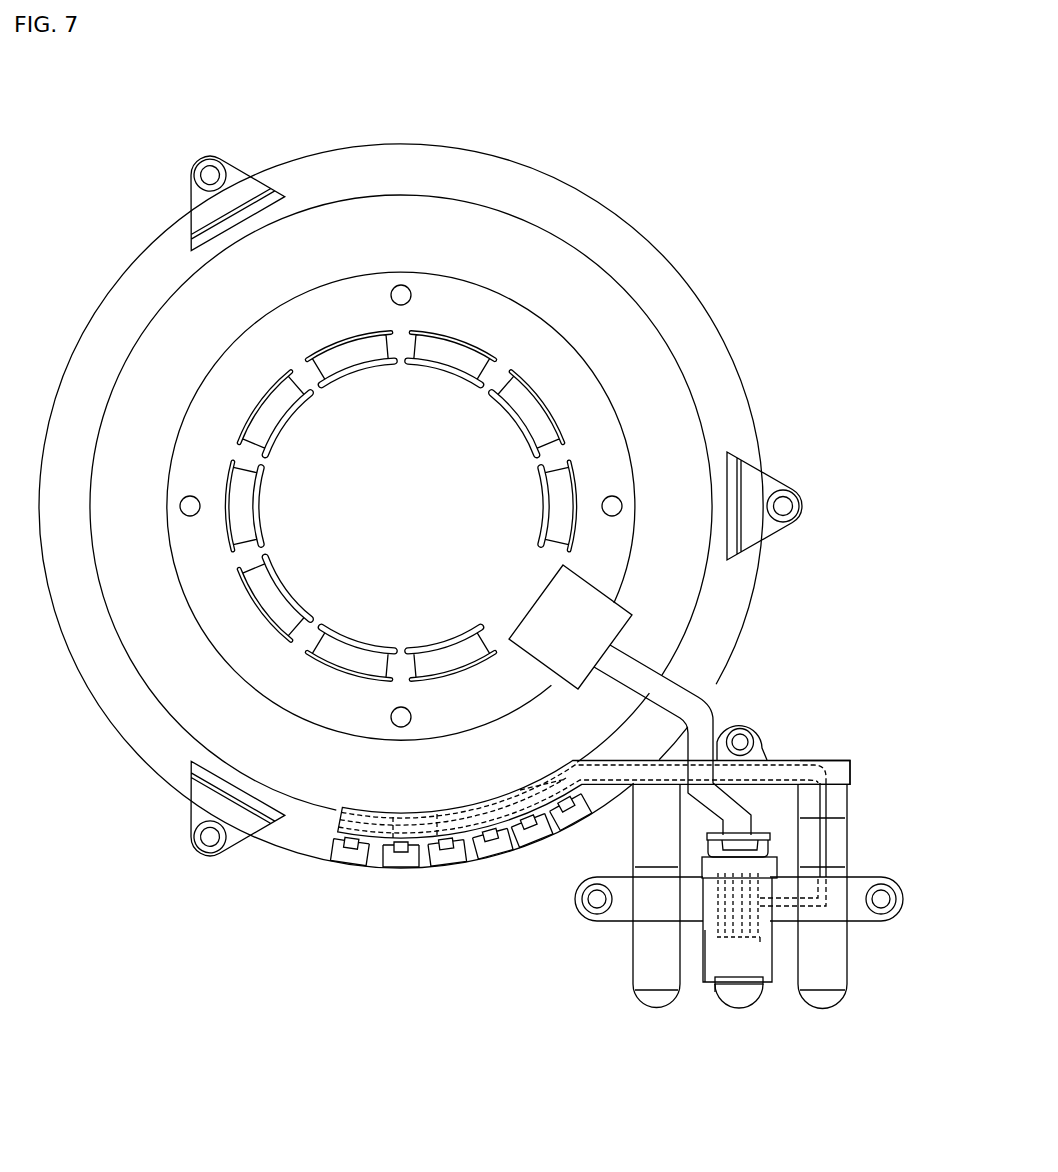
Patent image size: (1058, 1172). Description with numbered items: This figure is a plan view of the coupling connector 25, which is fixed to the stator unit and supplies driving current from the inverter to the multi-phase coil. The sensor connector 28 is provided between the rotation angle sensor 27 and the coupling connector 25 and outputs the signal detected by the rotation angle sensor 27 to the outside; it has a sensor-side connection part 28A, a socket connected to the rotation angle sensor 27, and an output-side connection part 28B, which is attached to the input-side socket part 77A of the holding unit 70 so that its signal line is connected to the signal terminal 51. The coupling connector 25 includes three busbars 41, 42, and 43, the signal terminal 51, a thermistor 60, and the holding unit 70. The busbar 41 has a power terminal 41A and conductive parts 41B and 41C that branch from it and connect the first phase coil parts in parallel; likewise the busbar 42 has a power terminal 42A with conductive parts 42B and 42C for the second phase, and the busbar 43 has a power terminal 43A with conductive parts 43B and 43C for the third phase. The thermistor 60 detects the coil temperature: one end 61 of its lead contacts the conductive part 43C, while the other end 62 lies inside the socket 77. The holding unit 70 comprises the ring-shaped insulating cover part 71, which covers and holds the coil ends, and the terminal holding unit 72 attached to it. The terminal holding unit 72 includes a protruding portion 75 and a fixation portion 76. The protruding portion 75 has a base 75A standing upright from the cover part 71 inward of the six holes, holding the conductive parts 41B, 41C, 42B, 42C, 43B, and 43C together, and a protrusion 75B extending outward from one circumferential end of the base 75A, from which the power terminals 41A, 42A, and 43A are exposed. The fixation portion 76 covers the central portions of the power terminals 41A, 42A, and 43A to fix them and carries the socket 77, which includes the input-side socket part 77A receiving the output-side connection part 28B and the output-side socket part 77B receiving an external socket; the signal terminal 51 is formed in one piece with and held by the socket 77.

The coupling connector 25 is at (545, 170).
The rotation angle sensor 27 is at (455, 277).
The sensor connector 28 is at (690, 677).
The sensor-side connection part 28A is at (633, 613).
The output-side connection part 28B is at (765, 835).
The holding unit 70 is at (600, 203).
The cover part 71 is at (655, 247).
The terminal holding unit 72 is at (878, 848).
The protruding portion 75 is at (850, 772).
The base 75A is at (345, 823).
The protrusion 75B is at (827, 764).
The fixation portion 76 is at (893, 901).
The thermistor 60 is at (827, 836).
The one end of lead of thermistor 61 is at (567, 800).
The other end of lead of thermistor 62 is at (760, 940).
The signal terminal 51 is at (717, 937).
The busbar 41 is at (650, 1000).
The power terminal 41A is at (665, 1003).
The conductive part 41B is at (353, 868).
The conductive part 41C is at (493, 858).
The busbar 42 is at (737, 1005).
The power terminal 42A is at (748, 1005).
The conductive part 42B is at (400, 868).
The conductive part 42C is at (533, 848).
The busbar 43 is at (832, 1005).
The power terminal 43A is at (838, 1003).
The conductive part 43B is at (447, 866).
The conductive part 43C is at (573, 836).
The socket 77 is at (703, 947).
The input-side socket part 77A is at (703, 935).
The output-side socket part 77B is at (722, 1010).